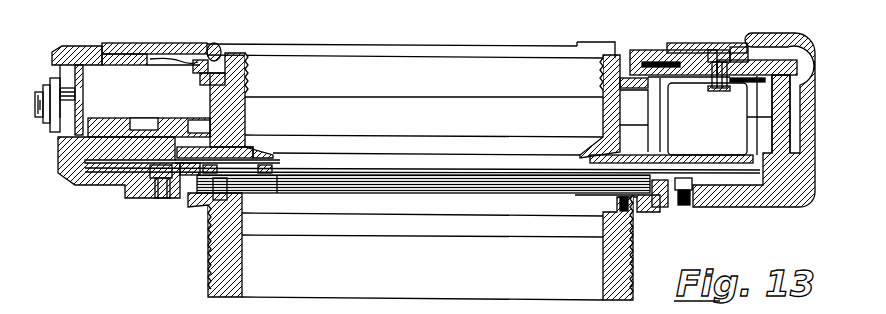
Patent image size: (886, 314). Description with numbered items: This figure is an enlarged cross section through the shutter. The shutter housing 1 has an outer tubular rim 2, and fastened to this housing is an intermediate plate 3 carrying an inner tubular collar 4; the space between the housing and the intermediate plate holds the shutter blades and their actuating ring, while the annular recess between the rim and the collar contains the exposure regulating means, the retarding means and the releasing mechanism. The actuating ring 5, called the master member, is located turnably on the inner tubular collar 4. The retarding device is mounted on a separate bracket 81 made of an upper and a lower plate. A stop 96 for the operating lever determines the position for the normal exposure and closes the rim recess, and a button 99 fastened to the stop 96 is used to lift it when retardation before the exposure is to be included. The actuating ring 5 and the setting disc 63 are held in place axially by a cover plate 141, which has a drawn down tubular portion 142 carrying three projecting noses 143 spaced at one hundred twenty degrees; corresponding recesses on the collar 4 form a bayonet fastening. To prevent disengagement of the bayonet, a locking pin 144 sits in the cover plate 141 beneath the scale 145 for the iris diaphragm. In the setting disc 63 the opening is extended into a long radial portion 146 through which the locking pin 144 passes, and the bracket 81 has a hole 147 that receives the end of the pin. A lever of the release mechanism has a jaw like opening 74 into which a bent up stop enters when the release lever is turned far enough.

The shutter housing 1 is at (771, 132).
The outer tubular rim 2 is at (797, 87).
The intermediate plate 3 is at (107, 140).
The inner tubular collar 4 is at (248, 74).
The actuating ring 5 is at (216, 48).
The setting disc 63 is at (768, 55).
The jaw like opening 74 is at (192, 160).
The bracket 81 is at (808, 116).
The stop 96 is at (84, 72).
The button 99 is at (58, 146).
The cover plate 141 is at (172, 44).
The drawn down tubular portion 142 is at (205, 62).
The projecting noses 143 is at (617, 62).
The locking pin 144 is at (723, 92).
The scale 145 is at (672, 45).
The long radial portion 146 is at (738, 46).
The hole 147 is at (714, 86).